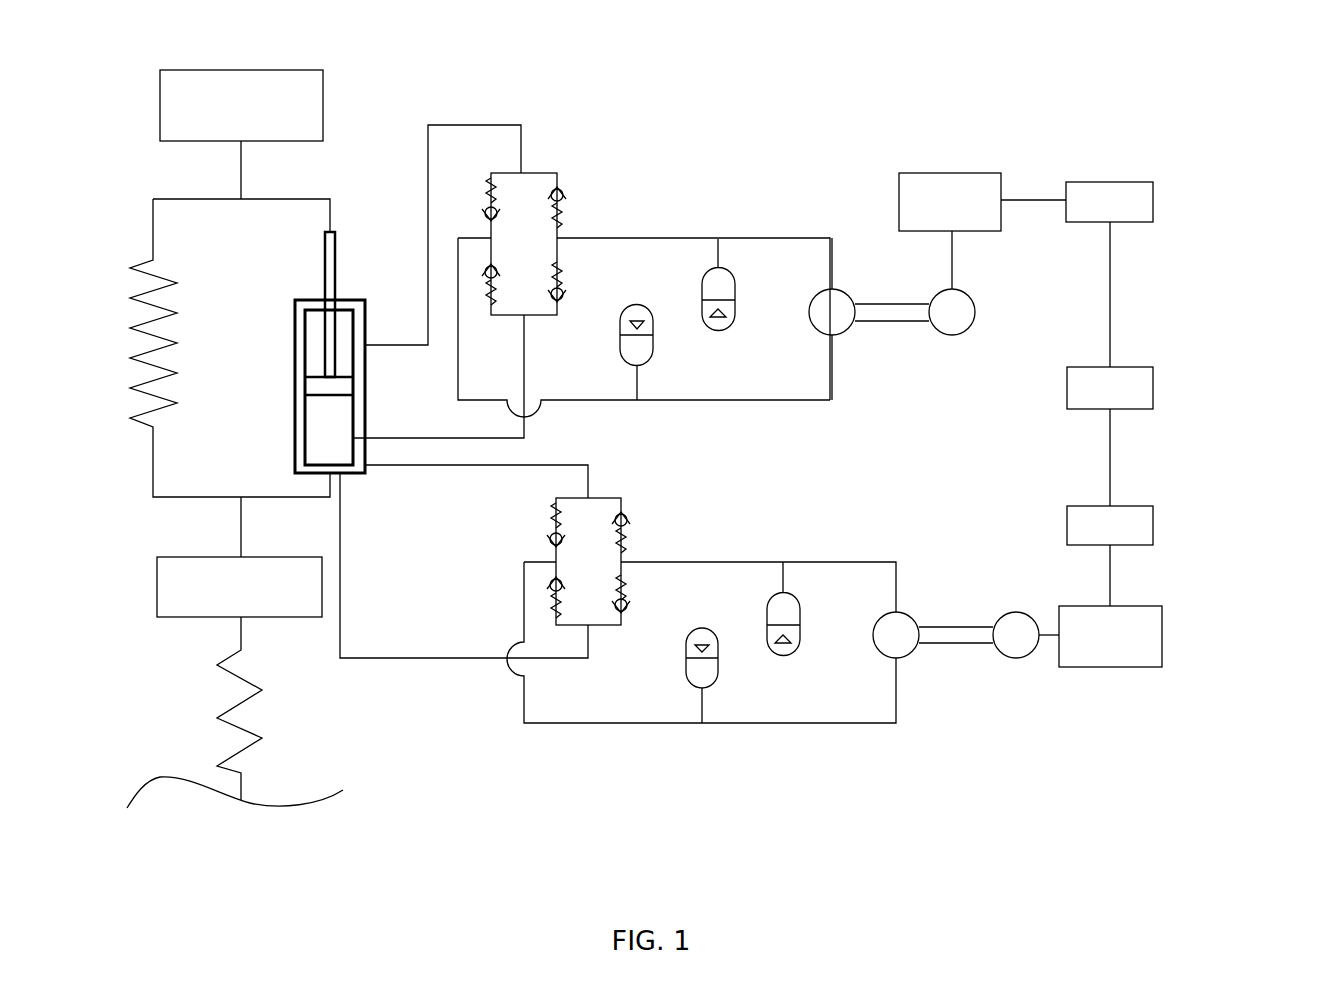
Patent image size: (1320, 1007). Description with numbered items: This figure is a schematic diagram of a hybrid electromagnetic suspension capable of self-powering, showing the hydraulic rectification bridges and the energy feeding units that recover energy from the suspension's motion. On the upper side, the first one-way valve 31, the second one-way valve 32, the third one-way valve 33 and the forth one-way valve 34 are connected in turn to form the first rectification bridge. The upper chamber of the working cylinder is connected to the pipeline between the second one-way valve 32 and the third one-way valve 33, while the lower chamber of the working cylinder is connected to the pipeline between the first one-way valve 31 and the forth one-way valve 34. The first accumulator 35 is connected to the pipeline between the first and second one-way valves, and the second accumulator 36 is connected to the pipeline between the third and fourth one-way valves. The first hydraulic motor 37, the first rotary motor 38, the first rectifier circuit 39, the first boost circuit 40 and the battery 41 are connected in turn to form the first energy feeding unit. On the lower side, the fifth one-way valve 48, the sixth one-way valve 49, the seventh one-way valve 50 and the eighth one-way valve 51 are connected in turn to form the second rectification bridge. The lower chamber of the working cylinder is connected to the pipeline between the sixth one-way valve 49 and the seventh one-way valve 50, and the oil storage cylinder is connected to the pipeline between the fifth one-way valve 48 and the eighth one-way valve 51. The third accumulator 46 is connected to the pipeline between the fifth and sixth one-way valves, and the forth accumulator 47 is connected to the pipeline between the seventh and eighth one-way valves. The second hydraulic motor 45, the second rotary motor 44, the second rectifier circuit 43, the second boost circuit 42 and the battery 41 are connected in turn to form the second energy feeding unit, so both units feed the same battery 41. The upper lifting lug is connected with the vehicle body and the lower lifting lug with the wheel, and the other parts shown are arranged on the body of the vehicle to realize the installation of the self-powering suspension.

The first one-way valve 31 is at (489, 268).
The second one-way valve 32 is at (489, 207).
The third one-way valve 33 is at (555, 190).
The forth one-way valve 34 is at (559, 290).
The first accumulator 35 is at (635, 305).
The second accumulator 36 is at (717, 268).
The first hydraulic motor 37 is at (831, 289).
The first rotary motor 38 is at (950, 289).
The first rectifier circuit 39 is at (1003, 173).
The first boost circuit 40 is at (1110, 182).
The battery 41 is at (1155, 372).
The second boost circuit 42 is at (1155, 512).
The second rectifier circuit 43 is at (1143, 635).
The second rotary motor 44 is at (1032, 656).
The second hydraulic motor 45 is at (912, 655).
The third accumulator 46 is at (785, 655).
The forth accumulator 47 is at (716, 684).
The fifth one-way valve 48 is at (624, 524).
The sixth one-way valve 49 is at (623, 606).
The seventh one-way valve 50 is at (560, 585).
The eighth one-way valve 51 is at (554, 542).